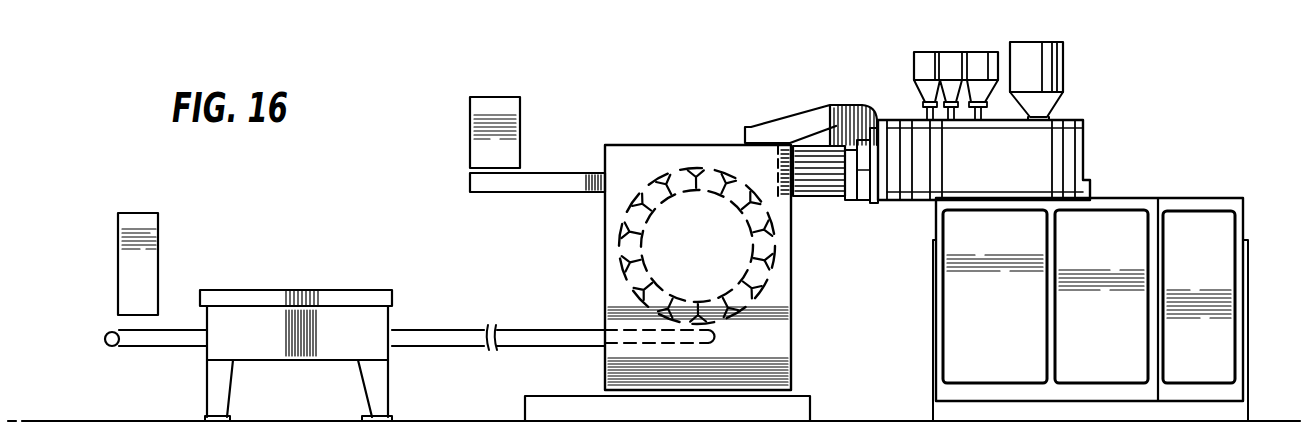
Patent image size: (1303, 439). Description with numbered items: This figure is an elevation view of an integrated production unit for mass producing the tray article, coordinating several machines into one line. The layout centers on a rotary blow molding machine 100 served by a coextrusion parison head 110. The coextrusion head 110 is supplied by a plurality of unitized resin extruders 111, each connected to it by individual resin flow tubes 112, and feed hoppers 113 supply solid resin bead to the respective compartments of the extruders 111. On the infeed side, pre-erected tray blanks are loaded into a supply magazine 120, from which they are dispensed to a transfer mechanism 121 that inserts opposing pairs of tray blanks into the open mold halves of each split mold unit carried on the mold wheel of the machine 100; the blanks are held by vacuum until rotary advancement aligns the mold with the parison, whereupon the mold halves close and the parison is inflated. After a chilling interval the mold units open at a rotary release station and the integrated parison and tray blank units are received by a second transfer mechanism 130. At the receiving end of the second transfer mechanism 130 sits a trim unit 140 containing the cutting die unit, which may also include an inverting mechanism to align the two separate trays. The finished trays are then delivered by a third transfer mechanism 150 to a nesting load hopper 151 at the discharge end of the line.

The rotary blow molding machine 100 is at (718, 247).
The coextrusion parison head 110 is at (737, 142).
The unitized resin extruders 111 is at (1062, 158).
The resin flow tubes 112 is at (808, 198).
The feed hoppers 113 is at (1013, 48).
The control unit 120 is at (470, 115).
The transfer mechanism 121 is at (572, 172).
The second transfer mechanism 130 is at (552, 342).
The trim unit 140 is at (338, 313).
The third transfer mechanism 150 is at (145, 346).
The nesting load hopper 151 is at (160, 243).